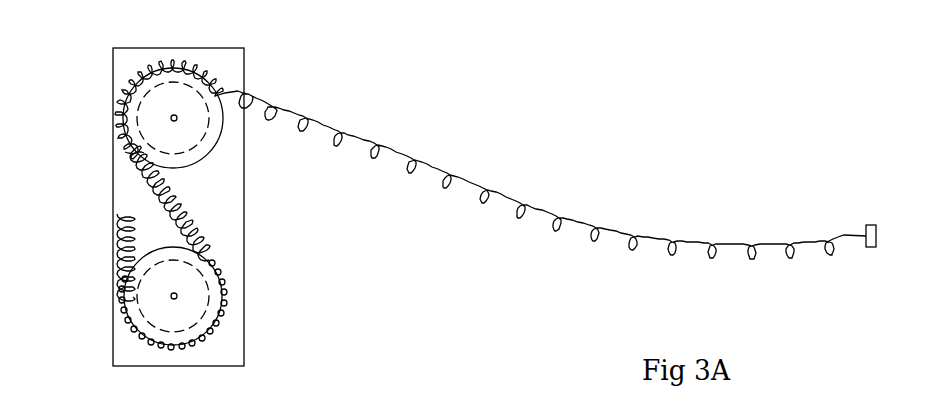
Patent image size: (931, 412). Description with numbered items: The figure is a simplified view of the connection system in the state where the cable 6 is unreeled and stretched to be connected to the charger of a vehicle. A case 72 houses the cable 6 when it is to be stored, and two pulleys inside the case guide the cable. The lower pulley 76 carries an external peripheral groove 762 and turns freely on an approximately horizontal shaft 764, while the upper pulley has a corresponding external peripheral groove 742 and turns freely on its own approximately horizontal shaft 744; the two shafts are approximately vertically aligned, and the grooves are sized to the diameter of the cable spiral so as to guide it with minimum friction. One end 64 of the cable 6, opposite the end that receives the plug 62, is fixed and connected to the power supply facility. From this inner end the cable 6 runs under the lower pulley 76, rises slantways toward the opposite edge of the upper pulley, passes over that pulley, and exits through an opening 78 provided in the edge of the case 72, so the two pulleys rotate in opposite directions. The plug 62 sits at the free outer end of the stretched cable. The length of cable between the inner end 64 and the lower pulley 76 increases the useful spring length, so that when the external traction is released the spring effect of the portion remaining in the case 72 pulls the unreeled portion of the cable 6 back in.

The cable 6 is at (335, 122).
The plug 62 is at (868, 225).
The end of cable 64 is at (117, 214).
The case 72 is at (245, 220).
The external peripheral groove 742 is at (148, 123).
The shaft 744 is at (177, 118).
The lower pulley 76 is at (213, 278).
The external peripheral groove 762 is at (118, 300).
The shaft 764 is at (177, 296).
The opening 78 is at (262, 84).